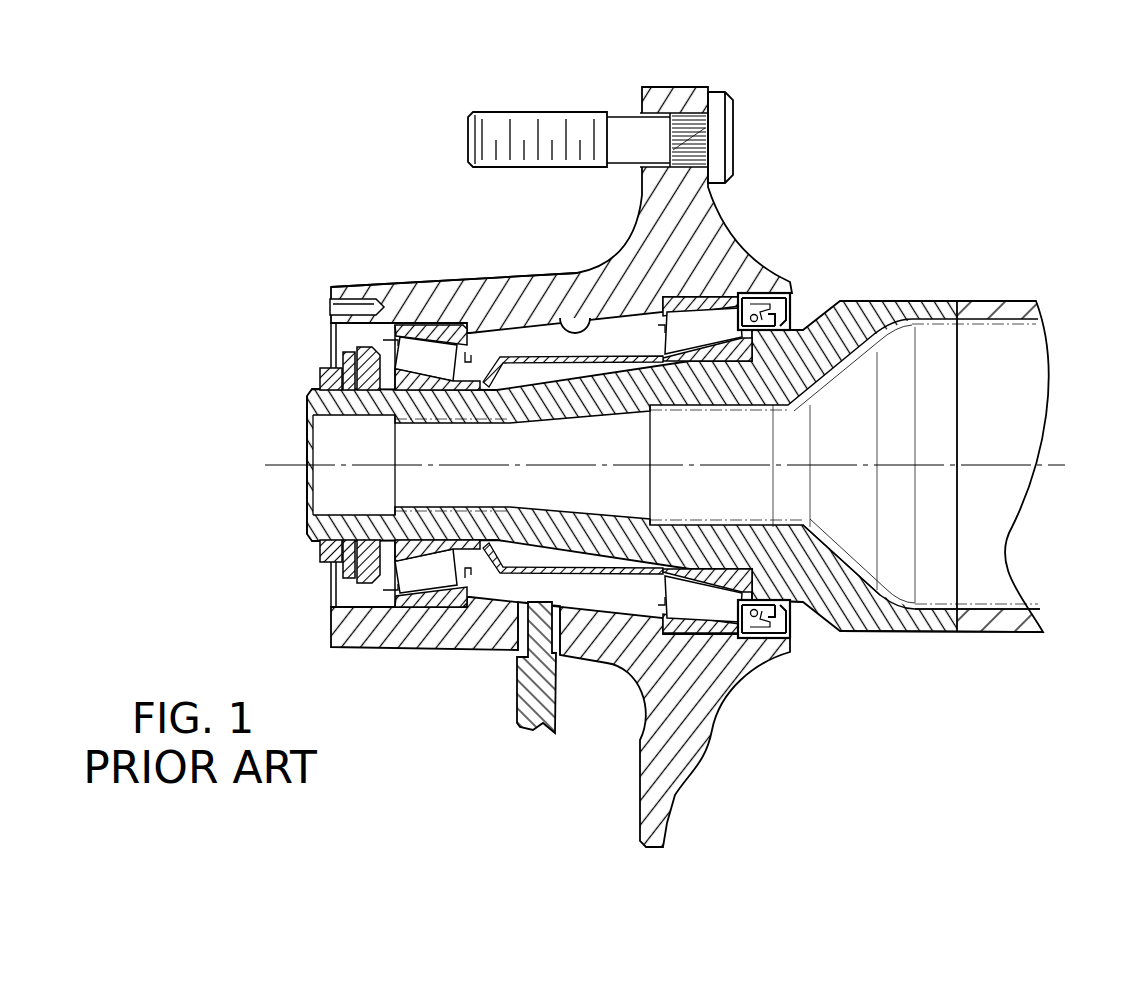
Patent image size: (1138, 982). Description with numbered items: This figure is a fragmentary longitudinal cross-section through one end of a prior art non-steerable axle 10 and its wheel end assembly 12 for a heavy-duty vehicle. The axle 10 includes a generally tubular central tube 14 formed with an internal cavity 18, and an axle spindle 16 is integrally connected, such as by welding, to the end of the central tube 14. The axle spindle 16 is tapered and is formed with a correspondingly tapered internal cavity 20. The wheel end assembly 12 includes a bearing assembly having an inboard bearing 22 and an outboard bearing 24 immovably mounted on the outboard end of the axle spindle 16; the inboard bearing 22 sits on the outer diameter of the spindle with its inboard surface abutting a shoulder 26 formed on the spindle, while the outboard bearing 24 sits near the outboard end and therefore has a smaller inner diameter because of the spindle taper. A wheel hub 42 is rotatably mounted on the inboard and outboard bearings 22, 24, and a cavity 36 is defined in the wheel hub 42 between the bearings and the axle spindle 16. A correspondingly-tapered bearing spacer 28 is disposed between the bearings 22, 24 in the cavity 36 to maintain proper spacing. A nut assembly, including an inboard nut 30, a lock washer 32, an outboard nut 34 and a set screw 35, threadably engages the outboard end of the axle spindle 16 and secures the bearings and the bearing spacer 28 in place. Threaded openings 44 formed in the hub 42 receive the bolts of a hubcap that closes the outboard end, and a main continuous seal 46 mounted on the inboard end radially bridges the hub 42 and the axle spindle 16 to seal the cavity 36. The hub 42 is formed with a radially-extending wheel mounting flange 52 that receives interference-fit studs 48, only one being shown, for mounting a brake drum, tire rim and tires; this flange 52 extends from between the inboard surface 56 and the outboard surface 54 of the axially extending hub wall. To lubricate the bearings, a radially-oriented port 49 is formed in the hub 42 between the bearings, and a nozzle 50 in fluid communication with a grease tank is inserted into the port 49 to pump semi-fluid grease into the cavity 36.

The non-steerable axle 10 is at (1000, 295).
The wheel end assembly 12 is at (748, 242).
The central tube 14 is at (1000, 632).
The axle spindle 16 is at (307, 528).
The internal cavity 18 is at (1000, 613).
The tapered internal cavity 20 is at (933, 610).
The inboard bearing 22 is at (703, 627).
The outboard bearing 24 is at (412, 597).
The shoulder 26 is at (752, 578).
The bearing spacer 28 is at (527, 357).
The inboard nut 30 is at (331, 326).
The lock washer 32 is at (357, 350).
The outboard nut 34 is at (322, 378).
The set screw 35 is at (336, 362).
The cavity 36 is at (560, 318).
The wheel hub 42 is at (372, 286).
The threaded openings 44 is at (330, 302).
The main continuous seal 46 is at (790, 305).
The interference-fit stud 48 is at (548, 112).
The radially-oriented port 49 is at (524, 612).
The nozzle 50 is at (518, 697).
The wheel mounting flange 52 is at (693, 88).
The outboard surface 54 is at (329, 586).
The inboard surface 56 is at (790, 652).